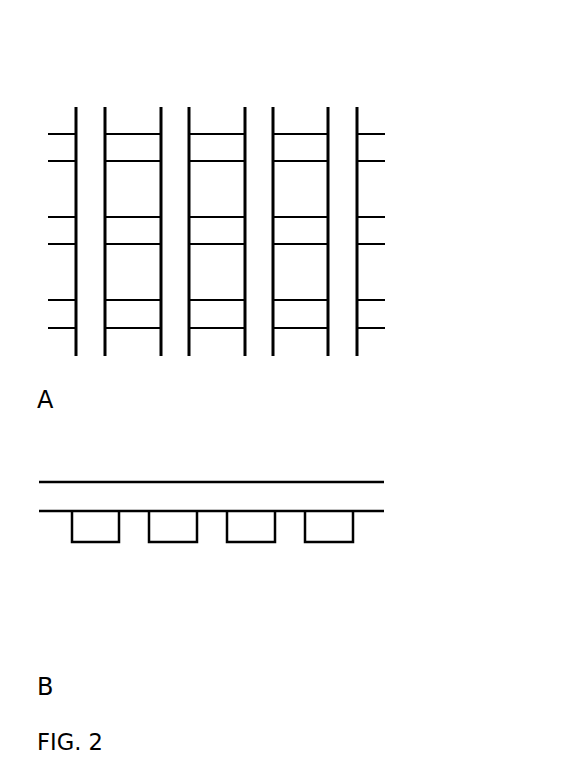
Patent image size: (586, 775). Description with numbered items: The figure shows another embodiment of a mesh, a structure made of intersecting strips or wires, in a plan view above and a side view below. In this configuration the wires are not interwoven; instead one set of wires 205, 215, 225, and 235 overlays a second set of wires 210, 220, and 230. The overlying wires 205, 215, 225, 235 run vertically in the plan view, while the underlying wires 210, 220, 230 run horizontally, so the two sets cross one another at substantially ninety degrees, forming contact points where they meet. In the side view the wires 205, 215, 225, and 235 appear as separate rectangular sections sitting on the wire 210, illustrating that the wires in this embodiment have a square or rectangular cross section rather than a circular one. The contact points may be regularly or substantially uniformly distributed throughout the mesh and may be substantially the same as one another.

The wire 205 is at (91, 108).
The wire 215 is at (174, 107).
The wire 225 is at (260, 107).
The wire 235 is at (343, 107).
The wire 210 is at (385, 150).
The wire 220 is at (383, 232).
The wire 230 is at (383, 315).